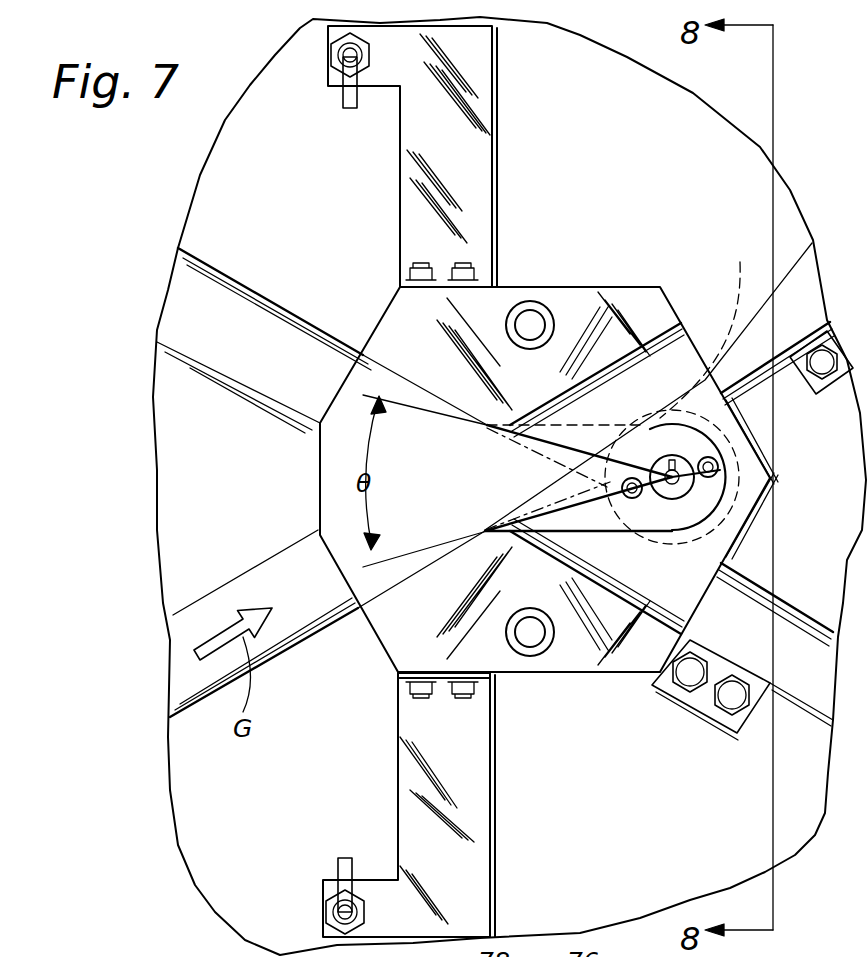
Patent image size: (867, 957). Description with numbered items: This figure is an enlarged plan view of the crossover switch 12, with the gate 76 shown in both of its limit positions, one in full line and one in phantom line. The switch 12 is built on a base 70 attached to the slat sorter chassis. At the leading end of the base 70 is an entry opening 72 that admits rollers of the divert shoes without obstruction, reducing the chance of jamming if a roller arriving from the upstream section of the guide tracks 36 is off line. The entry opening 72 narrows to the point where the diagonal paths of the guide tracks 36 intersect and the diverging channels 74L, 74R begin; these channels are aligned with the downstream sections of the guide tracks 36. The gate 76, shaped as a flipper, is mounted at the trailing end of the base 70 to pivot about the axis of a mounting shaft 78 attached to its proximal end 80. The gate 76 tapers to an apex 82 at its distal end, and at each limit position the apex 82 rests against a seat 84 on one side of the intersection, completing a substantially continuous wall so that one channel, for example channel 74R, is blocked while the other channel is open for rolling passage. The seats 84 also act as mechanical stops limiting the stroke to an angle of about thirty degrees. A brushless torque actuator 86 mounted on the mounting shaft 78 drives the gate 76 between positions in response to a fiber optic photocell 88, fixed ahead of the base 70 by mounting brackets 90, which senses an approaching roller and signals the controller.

The crossover switch 12 is at (650, 161).
The guide tracks 36 is at (227, 307).
The base 70 is at (488, 662).
The entry opening 72 is at (340, 467).
The diverging channel 74L is at (624, 388).
The diverging channel 74R is at (637, 577).
The gate 76 is at (608, 524).
The mounting shaft 78 is at (718, 470).
The proximal end 80 is at (700, 440).
The apex 82 is at (507, 532).
The seat 84 is at (487, 423).
The brushless torque actuator 86 is at (709, 326).
The fiber optic photocell 88 is at (349, 110).
The mounting brackets 90 is at (413, 783).